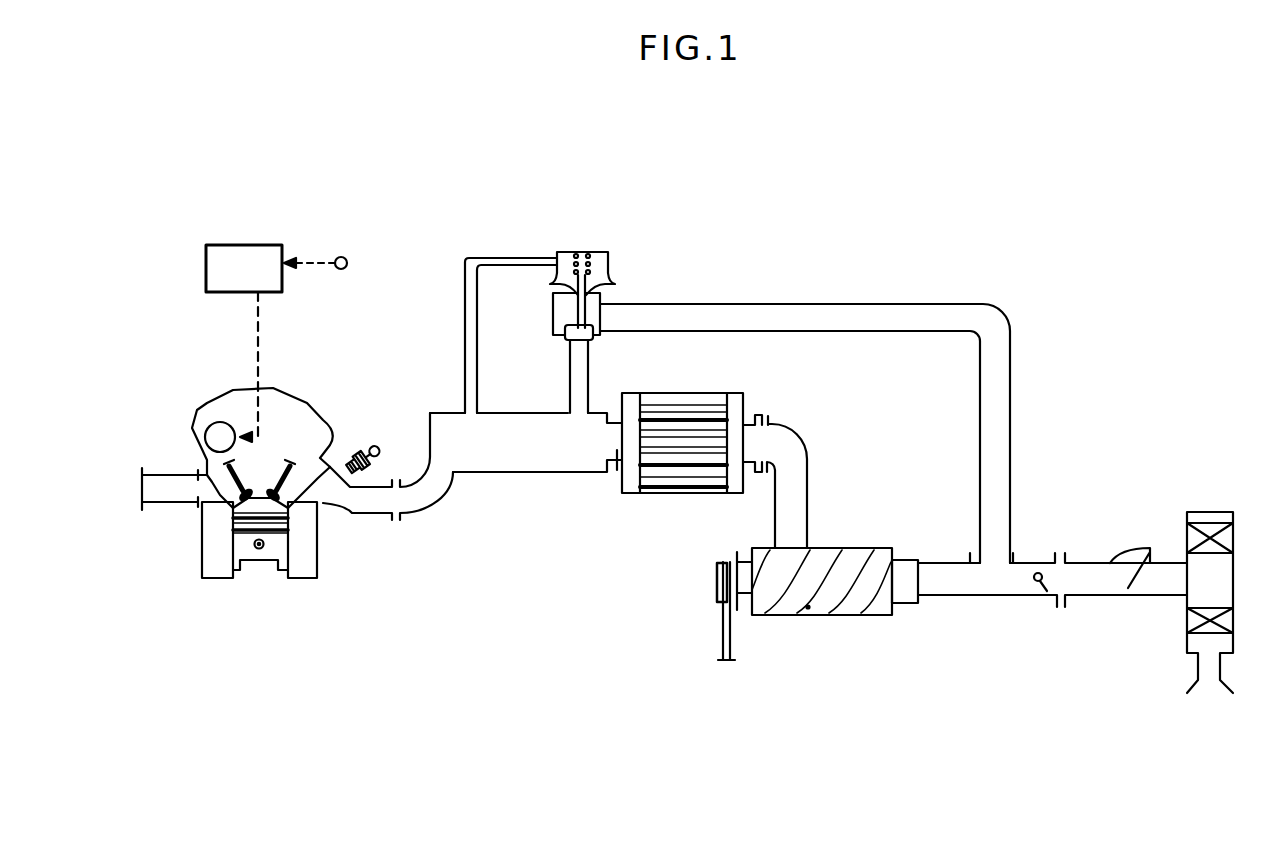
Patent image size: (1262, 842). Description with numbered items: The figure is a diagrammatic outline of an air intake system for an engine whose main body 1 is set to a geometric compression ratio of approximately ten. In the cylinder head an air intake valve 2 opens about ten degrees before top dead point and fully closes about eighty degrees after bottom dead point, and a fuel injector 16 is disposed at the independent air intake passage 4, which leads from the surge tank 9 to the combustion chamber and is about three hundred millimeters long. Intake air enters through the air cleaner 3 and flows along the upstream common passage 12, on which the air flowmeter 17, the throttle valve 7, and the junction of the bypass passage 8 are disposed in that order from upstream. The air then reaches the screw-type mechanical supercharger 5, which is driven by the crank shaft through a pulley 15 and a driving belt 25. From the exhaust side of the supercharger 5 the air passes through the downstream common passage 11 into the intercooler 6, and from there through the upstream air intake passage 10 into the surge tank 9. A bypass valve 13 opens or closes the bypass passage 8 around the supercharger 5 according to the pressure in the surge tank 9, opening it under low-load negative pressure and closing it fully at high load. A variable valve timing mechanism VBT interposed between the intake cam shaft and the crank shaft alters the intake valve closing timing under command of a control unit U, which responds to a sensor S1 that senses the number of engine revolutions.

The main body of an engine 1 is at (219, 386).
The air intake valve 2 is at (305, 400).
The air cleaner 3 is at (1212, 512).
The independent air intake passage 4 is at (377, 503).
The mechanical supercharger 5 is at (838, 608).
The intercooler 6 is at (663, 495).
The throttle valve 7 is at (1040, 573).
The bypass passage 8 is at (1005, 361).
The surge tank 9 is at (507, 466).
The upstream air intake passage 10 is at (618, 452).
The downstream common passage 11 is at (797, 496).
The upstream common passage 12 is at (1013, 588).
The bypass valve 13 is at (612, 284).
The pulley 15 is at (717, 581).
The fuel injector 16 is at (349, 462).
The air flowmeter 17 is at (1140, 570).
The driving belt 25 is at (722, 645).
The control unit U is at (245, 245).
The sensor S1 is at (347, 260).
The variable valve timing mechanism VBT is at (192, 424).